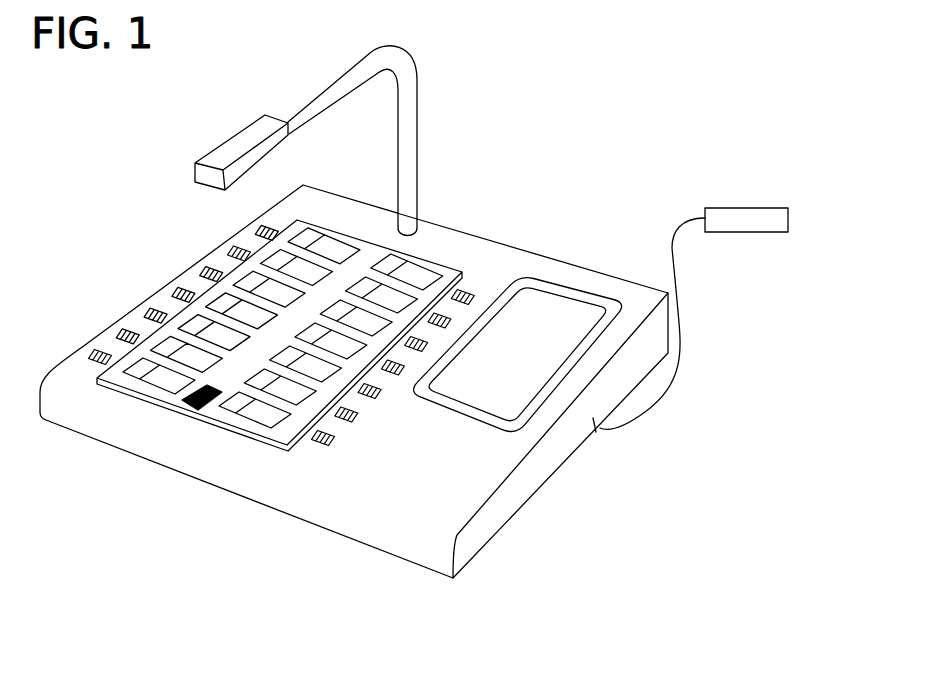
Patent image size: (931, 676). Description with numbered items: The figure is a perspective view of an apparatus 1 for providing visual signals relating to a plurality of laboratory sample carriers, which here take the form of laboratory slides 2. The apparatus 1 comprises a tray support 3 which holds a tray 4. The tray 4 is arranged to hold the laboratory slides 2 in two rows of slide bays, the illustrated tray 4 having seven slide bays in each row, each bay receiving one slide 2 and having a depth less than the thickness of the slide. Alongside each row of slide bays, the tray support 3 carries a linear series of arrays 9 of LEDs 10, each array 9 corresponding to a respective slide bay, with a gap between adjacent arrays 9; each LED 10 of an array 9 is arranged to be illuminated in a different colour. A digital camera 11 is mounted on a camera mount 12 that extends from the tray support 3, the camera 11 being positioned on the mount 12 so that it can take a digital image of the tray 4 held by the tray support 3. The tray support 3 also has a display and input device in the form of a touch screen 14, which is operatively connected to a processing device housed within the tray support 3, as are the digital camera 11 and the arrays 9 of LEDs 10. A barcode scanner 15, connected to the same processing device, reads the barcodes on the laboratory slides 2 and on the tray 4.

The apparatus 1 is at (665, 172).
The laboratory slide 2 is at (150, 380).
The tray support 3 is at (573, 460).
The tray 4 is at (157, 407).
The array of LEDs 9 is at (95, 352).
The LED 10 is at (125, 335).
The digital camera 11 is at (240, 142).
The camera mount 12 is at (418, 140).
The touch screen 14 is at (543, 312).
The barcode scanner 15 is at (757, 233).